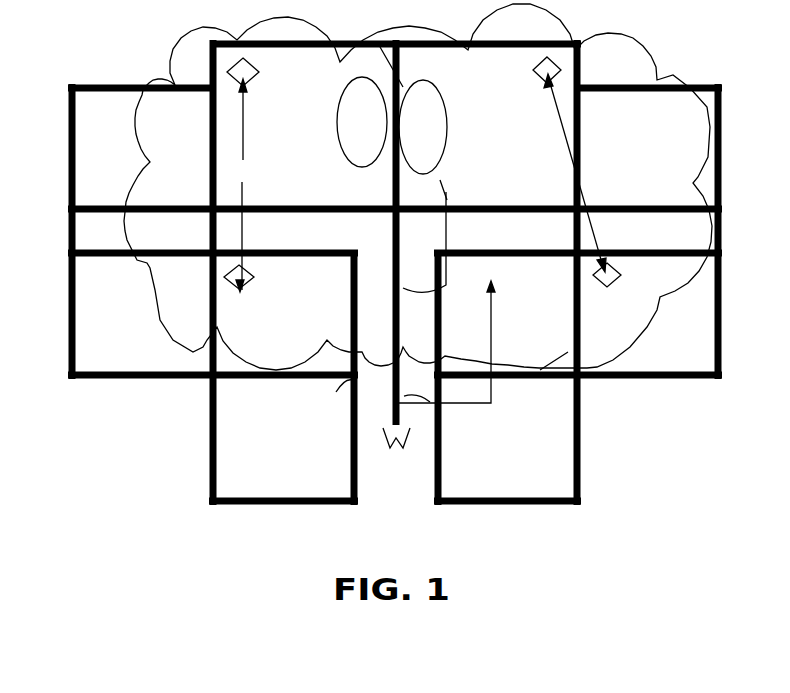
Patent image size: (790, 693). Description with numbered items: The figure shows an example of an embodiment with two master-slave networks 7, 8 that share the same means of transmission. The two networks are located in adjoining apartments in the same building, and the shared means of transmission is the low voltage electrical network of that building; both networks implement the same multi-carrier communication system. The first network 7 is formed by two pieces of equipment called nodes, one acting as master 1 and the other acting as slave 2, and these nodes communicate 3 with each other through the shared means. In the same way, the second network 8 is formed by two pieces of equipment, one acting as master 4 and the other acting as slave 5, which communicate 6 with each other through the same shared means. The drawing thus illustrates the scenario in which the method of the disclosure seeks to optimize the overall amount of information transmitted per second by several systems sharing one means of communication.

The master 1 is at (245, 75).
The slave 2 is at (239, 288).
The communication 3 is at (242, 185).
The master 4 is at (546, 79).
The slave 5 is at (607, 287).
The communication 6 is at (575, 173).
The first network 7 is at (418, 187).
The second network 8 is at (461, 239).